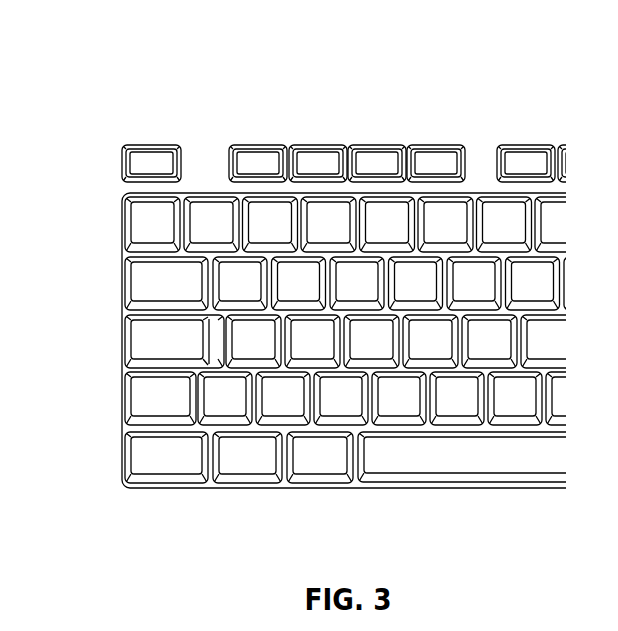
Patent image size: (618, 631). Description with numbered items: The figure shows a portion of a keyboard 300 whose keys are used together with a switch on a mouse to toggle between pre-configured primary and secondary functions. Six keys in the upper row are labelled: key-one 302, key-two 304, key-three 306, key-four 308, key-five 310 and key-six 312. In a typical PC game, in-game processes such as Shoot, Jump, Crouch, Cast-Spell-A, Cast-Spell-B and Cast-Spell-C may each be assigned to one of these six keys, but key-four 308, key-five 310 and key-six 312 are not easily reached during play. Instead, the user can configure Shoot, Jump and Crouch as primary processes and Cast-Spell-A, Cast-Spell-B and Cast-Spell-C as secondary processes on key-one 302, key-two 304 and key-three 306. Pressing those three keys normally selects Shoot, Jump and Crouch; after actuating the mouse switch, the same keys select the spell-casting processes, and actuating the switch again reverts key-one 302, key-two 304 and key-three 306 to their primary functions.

The keyboard 300 is at (60, 99).
The key-one 302 is at (205, 216).
The key-two 304 is at (262, 216).
The key-three 306 is at (328, 216).
The key-four 308 is at (382, 216).
The key-five 310 is at (440, 216).
The key-six 312 is at (505, 216).